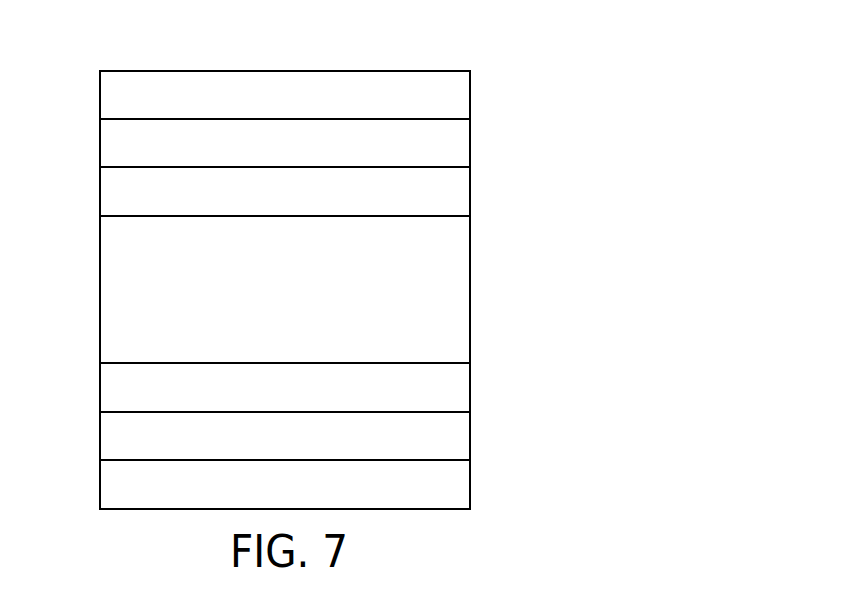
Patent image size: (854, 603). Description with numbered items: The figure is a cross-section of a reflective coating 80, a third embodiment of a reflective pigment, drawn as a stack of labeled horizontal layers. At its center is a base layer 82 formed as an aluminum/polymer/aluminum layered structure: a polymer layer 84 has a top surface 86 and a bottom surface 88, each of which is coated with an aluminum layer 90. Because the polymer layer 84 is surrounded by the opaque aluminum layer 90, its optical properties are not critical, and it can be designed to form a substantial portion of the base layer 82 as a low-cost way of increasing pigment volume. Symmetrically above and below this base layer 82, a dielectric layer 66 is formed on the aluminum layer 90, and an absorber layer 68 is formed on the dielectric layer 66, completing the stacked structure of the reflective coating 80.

The reflective coating 80 is at (403, 37).
The absorber layer 68 is at (455, 95).
The dielectric layer 66 is at (455, 147).
The base layer 82 is at (277, 290).
The aluminum layer 90 is at (455, 184).
The top surface 86 is at (437, 216).
The polymer layer 84 is at (450, 288).
The bottom surface 88 is at (437, 363).